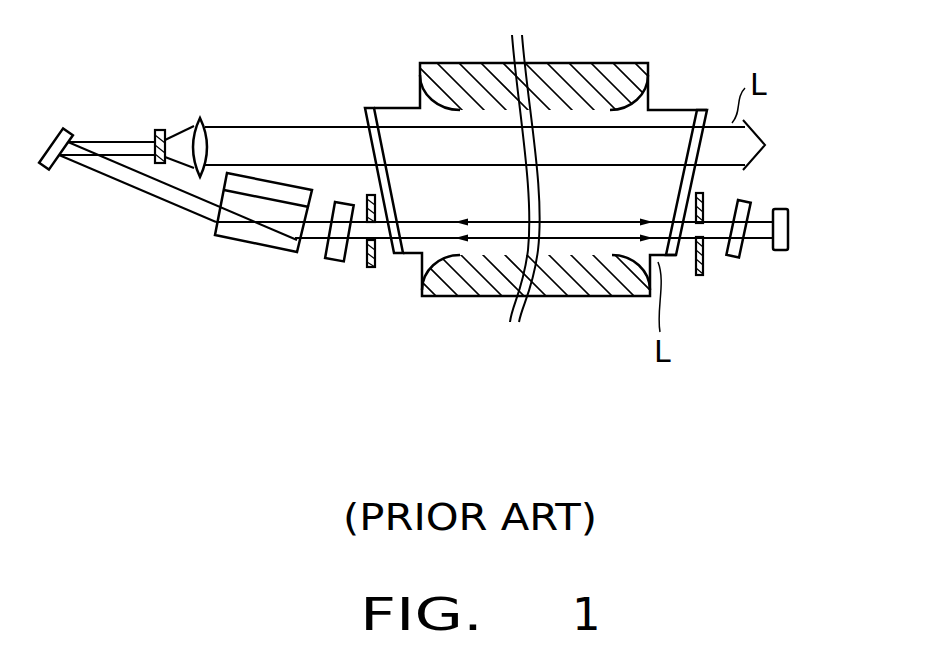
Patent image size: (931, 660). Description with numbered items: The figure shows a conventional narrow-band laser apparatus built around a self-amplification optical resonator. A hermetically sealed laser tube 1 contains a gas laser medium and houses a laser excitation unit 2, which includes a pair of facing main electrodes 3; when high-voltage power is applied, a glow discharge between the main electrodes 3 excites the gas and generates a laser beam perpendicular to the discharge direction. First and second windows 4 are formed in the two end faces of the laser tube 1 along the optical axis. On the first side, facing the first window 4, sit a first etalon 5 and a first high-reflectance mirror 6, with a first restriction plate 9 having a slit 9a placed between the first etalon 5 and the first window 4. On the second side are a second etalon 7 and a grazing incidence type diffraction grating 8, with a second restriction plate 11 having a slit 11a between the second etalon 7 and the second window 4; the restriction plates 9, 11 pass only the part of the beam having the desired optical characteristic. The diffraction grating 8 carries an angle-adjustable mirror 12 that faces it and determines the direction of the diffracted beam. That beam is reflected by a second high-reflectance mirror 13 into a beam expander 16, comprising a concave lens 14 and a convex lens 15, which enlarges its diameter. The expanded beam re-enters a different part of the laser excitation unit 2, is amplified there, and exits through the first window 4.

The laser tube 1 is at (693, 110).
The laser excitation unit 2 is at (445, 212).
The main electrodes 3 is at (592, 64).
The first and second windows 4 is at (366, 140).
The first etalon 5 is at (747, 245).
The first high-reflectance mirror 6 is at (788, 230).
The second etalon 7 is at (330, 263).
The grazing incidence type diffraction grating 8 is at (240, 248).
The first restriction plate 9 is at (698, 277).
The slit 9a is at (705, 232).
The second restriction plate 11 is at (367, 270).
The slit 11a is at (378, 233).
The adjustable mirror 12 is at (254, 176).
The second high-reflectance mirror 13 is at (52, 170).
The concave lens 14 is at (158, 130).
The convex lens 15 is at (197, 118).
The beam expander 16 is at (168, 110).